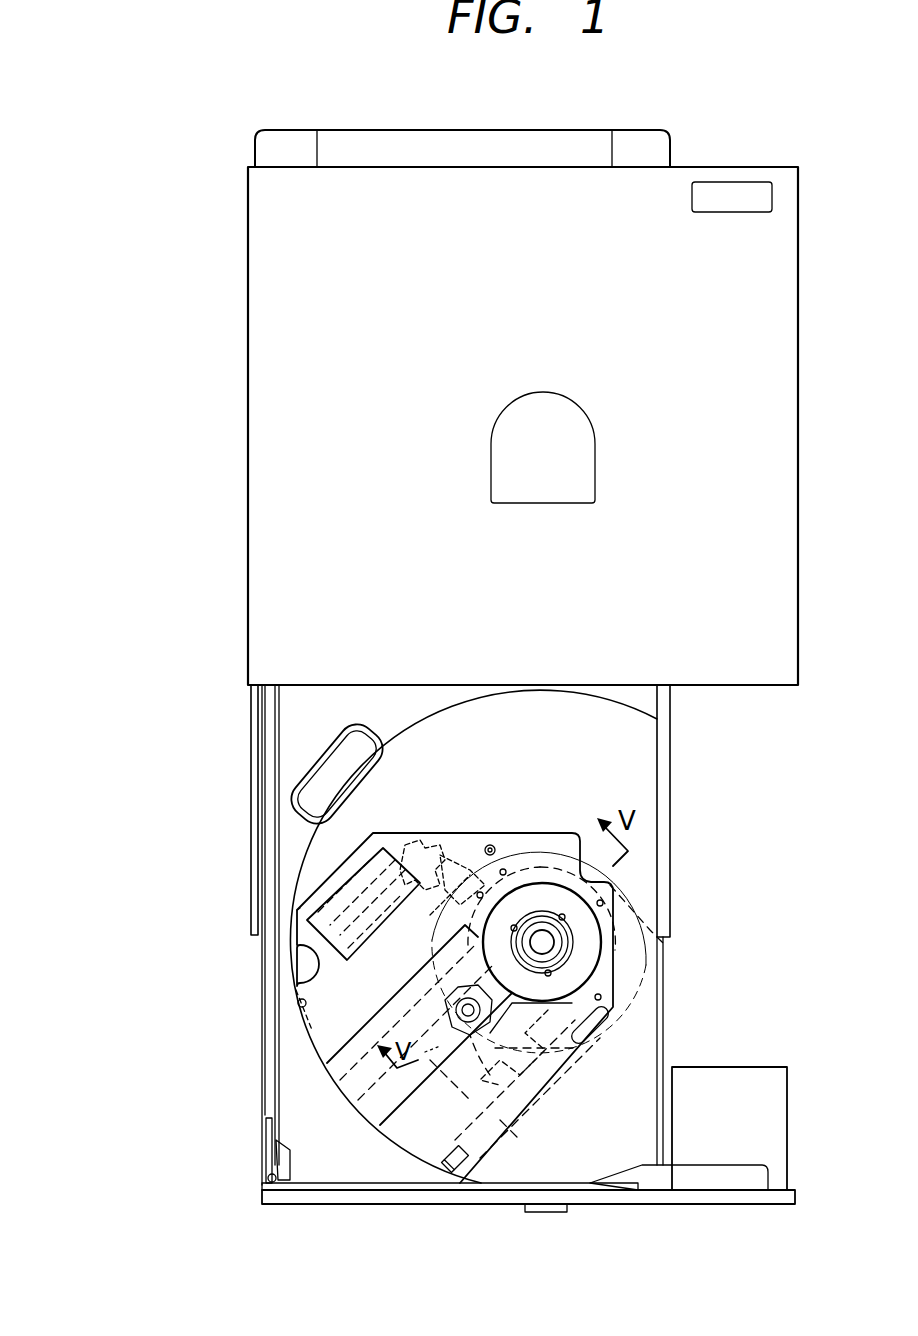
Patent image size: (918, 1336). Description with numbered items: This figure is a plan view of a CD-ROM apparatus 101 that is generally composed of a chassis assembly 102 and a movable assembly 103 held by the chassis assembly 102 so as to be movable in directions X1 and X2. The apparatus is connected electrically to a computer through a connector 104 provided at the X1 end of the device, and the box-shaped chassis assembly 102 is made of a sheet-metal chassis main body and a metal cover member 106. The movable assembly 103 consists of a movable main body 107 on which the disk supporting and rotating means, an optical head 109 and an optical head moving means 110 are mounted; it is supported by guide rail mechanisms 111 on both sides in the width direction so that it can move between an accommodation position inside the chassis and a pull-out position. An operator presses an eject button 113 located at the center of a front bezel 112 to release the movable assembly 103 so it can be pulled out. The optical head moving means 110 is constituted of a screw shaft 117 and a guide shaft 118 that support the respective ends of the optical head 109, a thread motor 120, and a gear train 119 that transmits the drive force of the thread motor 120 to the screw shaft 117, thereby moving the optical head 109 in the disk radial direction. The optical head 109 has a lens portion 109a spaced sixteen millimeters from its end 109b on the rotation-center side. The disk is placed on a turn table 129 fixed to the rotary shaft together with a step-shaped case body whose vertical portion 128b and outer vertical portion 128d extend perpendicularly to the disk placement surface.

The CD-ROM apparatus 101 is at (172, 127).
The chassis assembly 102 is at (234, 361).
The movable assembly 103 is at (246, 1114).
The connector 104 is at (537, 129).
The cover member 106 is at (259, 285).
The movable main body 107 is at (328, 1166).
The optical head 109 is at (419, 1025).
The lens portion 109a is at (509, 1071).
The end of the optical head 109b is at (655, 978).
The optical head moving means 110 is at (397, 836).
The guide rail mechanisms 111 is at (258, 738).
The front bezel 112 is at (678, 1205).
The eject button 113 is at (553, 1213).
The screw shaft 117 is at (300, 987).
The guide shaft 118 is at (480, 1195).
The gear train 119 is at (440, 838).
The thread motor 120 is at (340, 893).
The vertical portion 128b is at (645, 928).
The vertical portion 128d is at (600, 860).
The turn table 129 is at (532, 880).